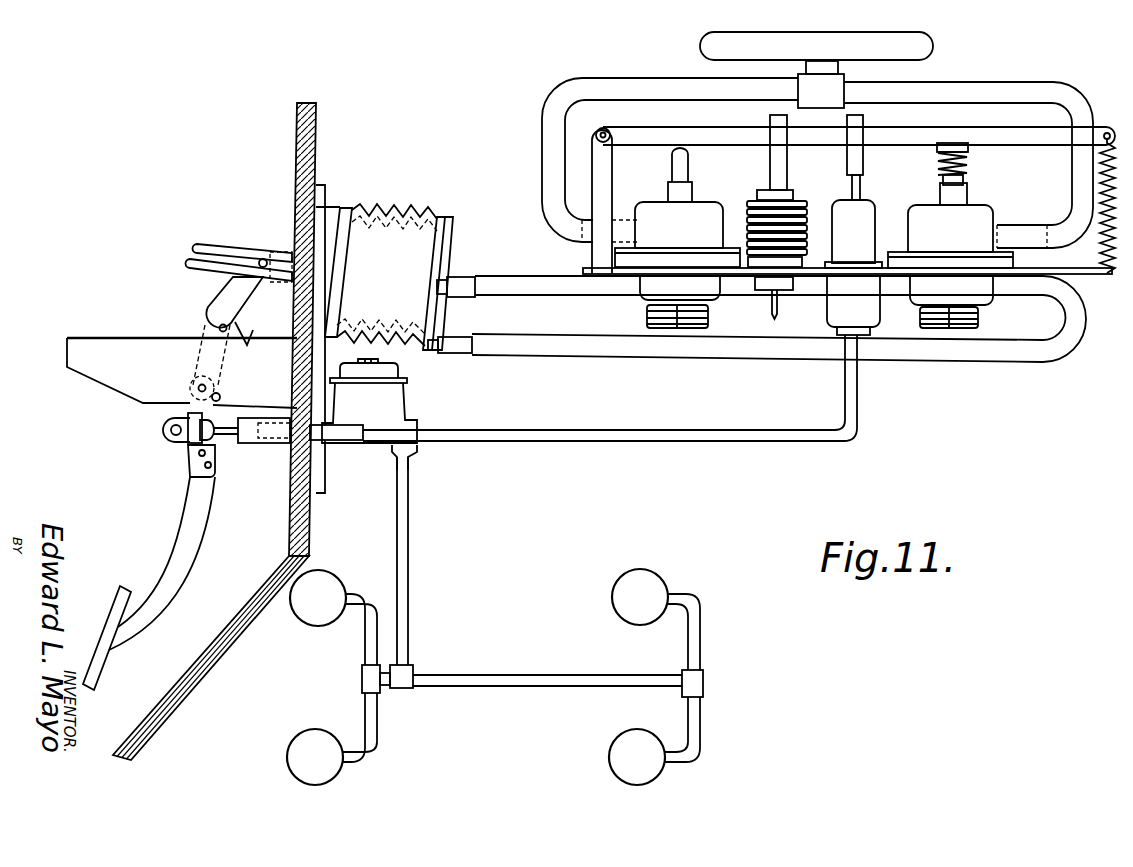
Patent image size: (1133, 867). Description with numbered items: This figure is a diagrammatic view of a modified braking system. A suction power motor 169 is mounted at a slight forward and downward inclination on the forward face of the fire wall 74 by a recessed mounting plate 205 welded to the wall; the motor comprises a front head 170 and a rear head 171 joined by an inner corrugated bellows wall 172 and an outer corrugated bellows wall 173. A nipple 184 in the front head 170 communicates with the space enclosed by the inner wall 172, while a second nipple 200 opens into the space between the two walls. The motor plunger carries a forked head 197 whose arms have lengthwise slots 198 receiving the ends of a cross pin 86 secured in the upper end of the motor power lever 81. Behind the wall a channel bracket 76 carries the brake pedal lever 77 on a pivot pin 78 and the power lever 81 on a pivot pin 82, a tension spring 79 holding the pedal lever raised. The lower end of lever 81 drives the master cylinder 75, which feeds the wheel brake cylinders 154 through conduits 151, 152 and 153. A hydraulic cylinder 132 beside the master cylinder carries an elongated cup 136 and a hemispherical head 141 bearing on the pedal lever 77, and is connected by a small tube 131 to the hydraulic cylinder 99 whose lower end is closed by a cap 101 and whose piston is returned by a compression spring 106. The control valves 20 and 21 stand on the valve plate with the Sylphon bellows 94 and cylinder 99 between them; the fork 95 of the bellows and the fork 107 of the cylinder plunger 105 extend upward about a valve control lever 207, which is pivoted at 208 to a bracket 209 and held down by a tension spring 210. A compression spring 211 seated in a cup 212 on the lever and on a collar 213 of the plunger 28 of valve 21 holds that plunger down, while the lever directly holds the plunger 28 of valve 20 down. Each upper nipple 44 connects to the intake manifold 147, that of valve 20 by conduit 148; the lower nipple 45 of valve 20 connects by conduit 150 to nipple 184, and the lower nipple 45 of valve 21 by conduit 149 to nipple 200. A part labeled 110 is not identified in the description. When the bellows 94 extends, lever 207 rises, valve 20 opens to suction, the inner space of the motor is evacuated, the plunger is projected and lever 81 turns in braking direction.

The fire wall 74 is at (297, 112).
The mounting plate 205 is at (325, 186).
The rear head 171 is at (346, 208).
The outer corrugated bellows wall 173 is at (372, 210).
The suction power motor 169 is at (406, 211).
The inner corrugated bellows wall 172 is at (440, 220).
The front head 170 is at (455, 228).
The nipple 184 is at (460, 282).
The upper nipple 44 is at (572, 236).
The forked head 197 is at (212, 245).
The cross pin 86 is at (264, 258).
The lengthwise slot 198 is at (190, 264).
The motor power lever 81 is at (222, 300).
The tension spring 79 is at (250, 347).
The channel bracket 76 is at (75, 350).
The pivot pin 78 is at (198, 386).
The pivot pin 82 is at (220, 395).
The hemispherical head 141 is at (200, 438).
The elongated cup 136 is at (250, 447).
The brake pedal lever 77 is at (193, 520).
The master cylinder 75 is at (388, 408).
The hydraulic cylinder 132 is at (348, 440).
The second nipple 200 is at (455, 352).
The conduit 150 is at (550, 297).
The conduit 149 is at (555, 360).
The lower nipple 45 is at (618, 297).
The conduit 151 is at (410, 545).
The conduit 152 is at (516, 676).
The conduit 153 is at (378, 725).
The wheel brake cylinder 154 is at (318, 618).
The small diameter tube 131 is at (857, 440).
The conduit 148 is at (571, 81).
The intake manifold 147 is at (703, 45).
The compression spring 106 is at (835, 86).
The piston rod or plunger 105 is at (1048, 84).
The pivot 208 is at (607, 132).
The valve control lever 207 is at (745, 132).
The fork 107 is at (863, 124).
The cup 212 is at (952, 143).
The bracket 209 is at (592, 152).
The plunger 28 is at (672, 164).
The control valve 20 is at (659, 202).
The fork 95 is at (770, 168).
The metal bellows or Sylphon 94 is at (806, 210).
The compression spring 211 is at (938, 155).
The collar 213 is at (968, 166).
The control valve 21 is at (906, 206).
The hydraulic cylinder 99 is at (885, 240).
The tension spring 210 is at (1100, 255).
The needle 110 is at (770, 306).
The closure cap 101 is at (828, 306).